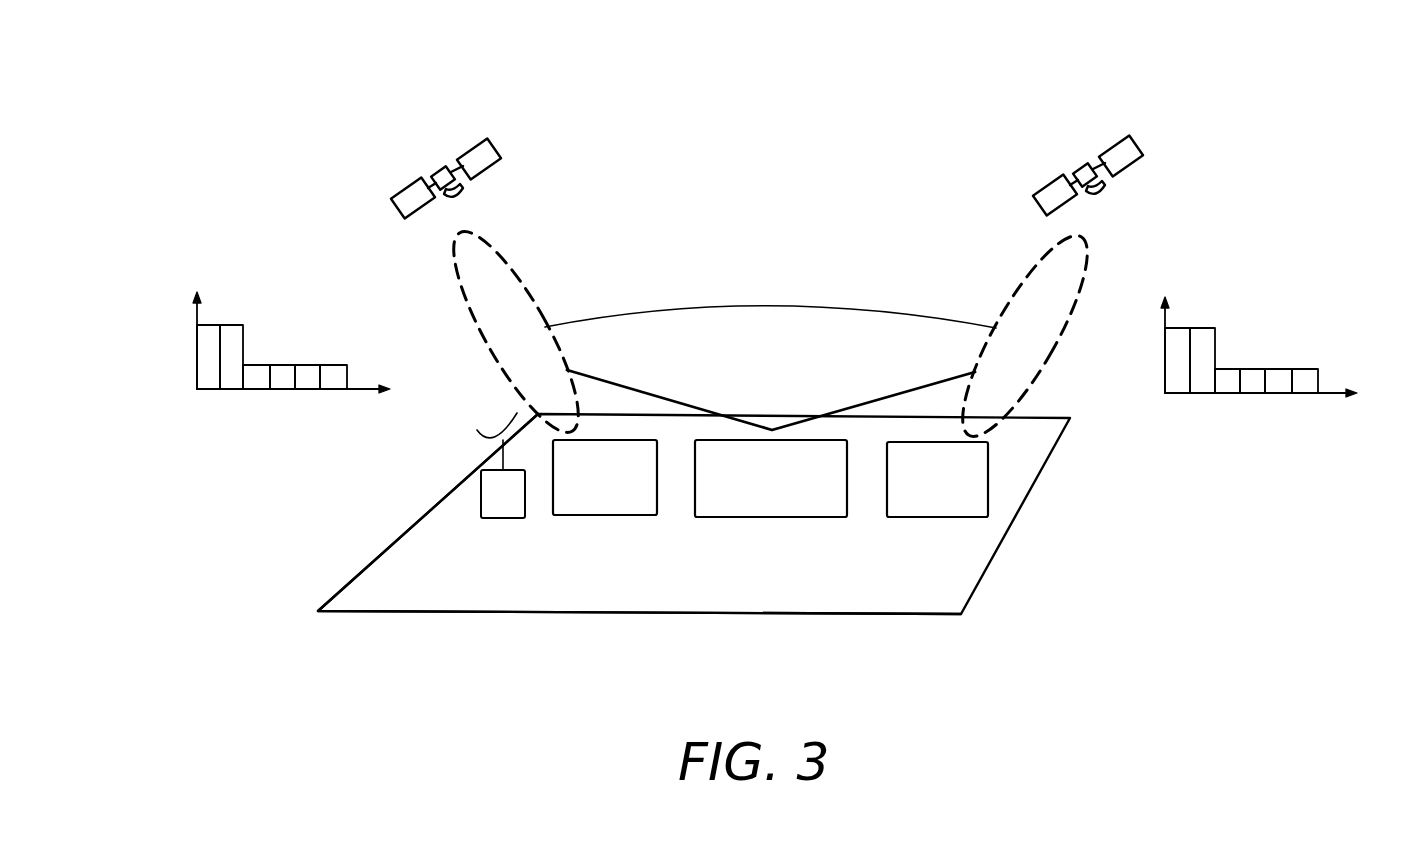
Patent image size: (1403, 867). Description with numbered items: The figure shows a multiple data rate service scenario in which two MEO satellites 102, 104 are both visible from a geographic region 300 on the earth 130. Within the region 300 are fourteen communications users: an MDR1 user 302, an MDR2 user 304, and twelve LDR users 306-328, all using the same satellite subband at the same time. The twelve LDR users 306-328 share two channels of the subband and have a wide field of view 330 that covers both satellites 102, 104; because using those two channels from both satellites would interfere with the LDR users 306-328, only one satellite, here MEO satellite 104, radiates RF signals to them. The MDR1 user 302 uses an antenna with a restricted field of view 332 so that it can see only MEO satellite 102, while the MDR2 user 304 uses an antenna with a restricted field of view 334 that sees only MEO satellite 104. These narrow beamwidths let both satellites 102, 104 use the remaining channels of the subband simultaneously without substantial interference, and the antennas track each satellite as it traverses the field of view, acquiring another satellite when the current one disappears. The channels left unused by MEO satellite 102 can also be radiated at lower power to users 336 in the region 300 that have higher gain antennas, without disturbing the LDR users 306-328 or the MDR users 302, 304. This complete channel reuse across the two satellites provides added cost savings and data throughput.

The MEO satellite 102 is at (418, 132).
The MEO satellite 104 is at (1162, 98).
The earth 130 is at (370, 613).
The geographic region 300 is at (875, 603).
The MDR1 user 302 is at (608, 510).
The MDR2 user 304 is at (900, 512).
The LDR users 306-328 is at (713, 510).
The FOV 330 is at (742, 312).
The FOV 332 is at (512, 275).
The FOV 334 is at (1017, 297).
The users 336 is at (500, 517).